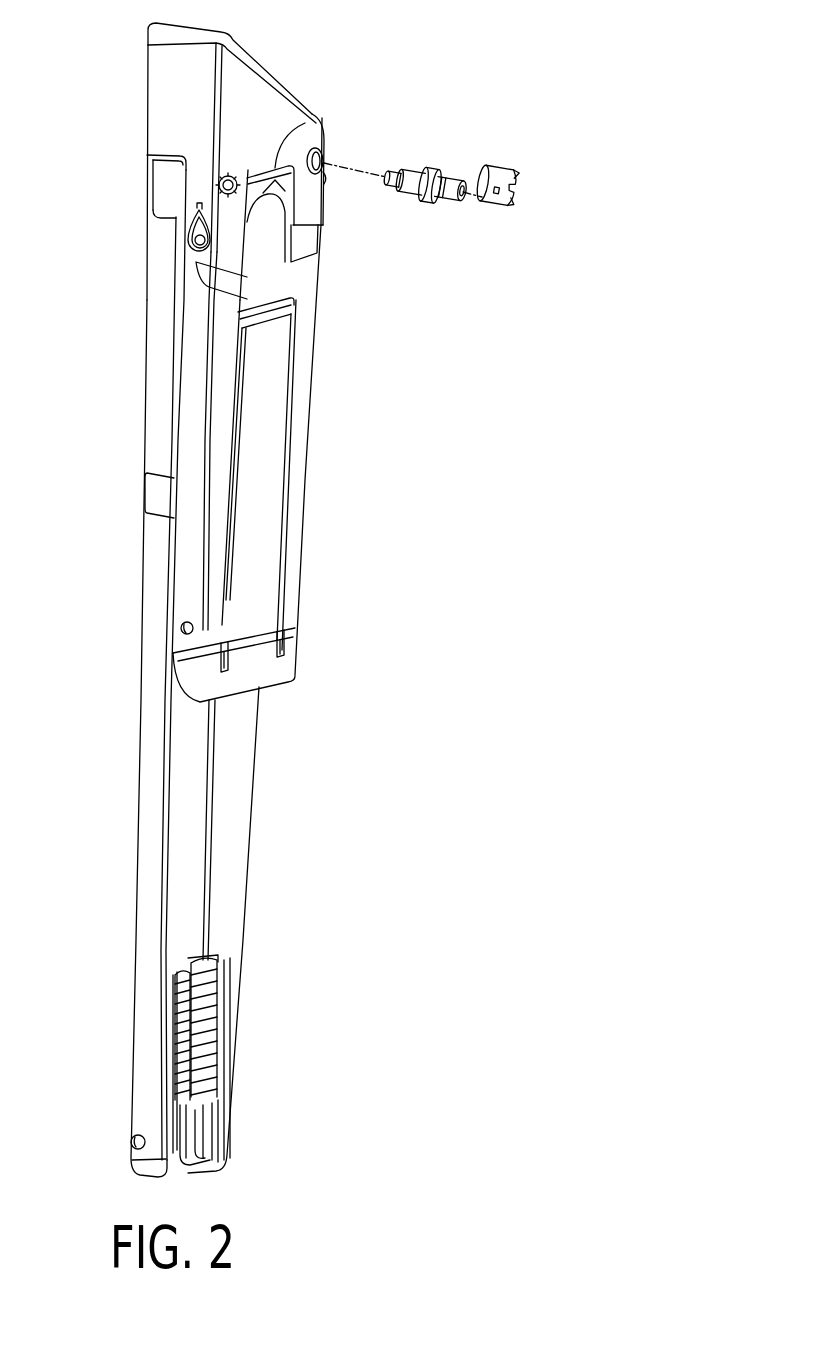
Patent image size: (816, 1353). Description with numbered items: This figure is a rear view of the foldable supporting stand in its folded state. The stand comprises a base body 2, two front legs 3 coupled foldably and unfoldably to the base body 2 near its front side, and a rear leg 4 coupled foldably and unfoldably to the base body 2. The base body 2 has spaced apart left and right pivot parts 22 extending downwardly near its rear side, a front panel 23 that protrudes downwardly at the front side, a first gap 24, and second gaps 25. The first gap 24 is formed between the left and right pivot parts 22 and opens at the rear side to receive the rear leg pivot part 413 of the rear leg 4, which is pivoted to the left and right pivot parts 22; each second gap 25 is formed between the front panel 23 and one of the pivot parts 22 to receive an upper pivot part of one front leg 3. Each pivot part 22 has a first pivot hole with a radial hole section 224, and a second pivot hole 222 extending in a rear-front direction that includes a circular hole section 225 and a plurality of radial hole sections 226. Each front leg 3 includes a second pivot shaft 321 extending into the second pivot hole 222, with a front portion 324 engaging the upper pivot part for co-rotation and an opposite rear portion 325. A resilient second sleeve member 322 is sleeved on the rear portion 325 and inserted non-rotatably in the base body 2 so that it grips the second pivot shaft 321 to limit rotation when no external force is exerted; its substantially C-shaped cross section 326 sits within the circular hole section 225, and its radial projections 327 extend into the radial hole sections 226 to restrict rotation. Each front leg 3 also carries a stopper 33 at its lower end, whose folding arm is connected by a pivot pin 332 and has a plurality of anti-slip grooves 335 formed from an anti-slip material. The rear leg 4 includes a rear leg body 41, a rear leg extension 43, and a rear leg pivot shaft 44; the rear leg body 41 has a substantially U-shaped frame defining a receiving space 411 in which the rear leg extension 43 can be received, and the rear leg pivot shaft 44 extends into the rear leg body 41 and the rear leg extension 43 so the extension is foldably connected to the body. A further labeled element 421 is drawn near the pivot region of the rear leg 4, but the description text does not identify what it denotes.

The base body 2 is at (306, 89).
The left and right pivot parts 22 is at (308, 214).
The front panel 23 is at (146, 170).
The first gap 24 is at (321, 124).
The second gap 25 is at (151, 184).
The second pivot hole 222 is at (222, 160).
The radial hole section 224 is at (193, 216).
The circular hole section 225 is at (329, 171).
The radial hole sections 226 is at (332, 146).
The front legs 3 is at (118, 831).
The stopper 33 is at (180, 1022).
The second pivot shaft 321 is at (461, 170).
The resilient second sleeve member 322 is at (495, 190).
The front portion 324 is at (426, 170).
The rear portion 325 is at (443, 200).
The C-shaped cross section 326 is at (491, 208).
The radial projections 327 is at (512, 171).
The pivot pin 332 is at (135, 1135).
The anti-slip grooves 335 is at (175, 1057).
The rear leg 4 is at (305, 587).
The rear leg body 41 is at (298, 508).
The receiving space 411 is at (286, 528).
The rear leg pivot part 413 is at (261, 239).
The pivot pin 421 is at (193, 240).
The rear leg extension 43 is at (261, 595).
The rear leg pivot shaft 44 is at (181, 634).